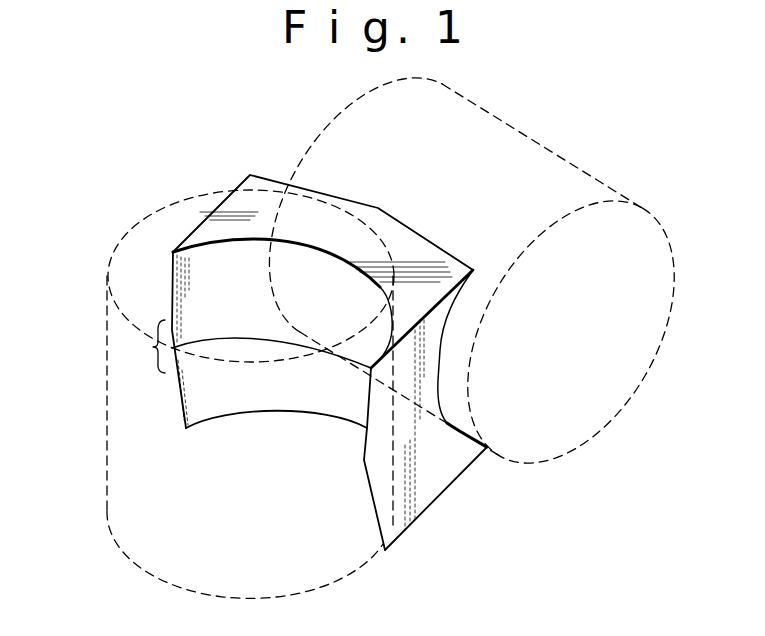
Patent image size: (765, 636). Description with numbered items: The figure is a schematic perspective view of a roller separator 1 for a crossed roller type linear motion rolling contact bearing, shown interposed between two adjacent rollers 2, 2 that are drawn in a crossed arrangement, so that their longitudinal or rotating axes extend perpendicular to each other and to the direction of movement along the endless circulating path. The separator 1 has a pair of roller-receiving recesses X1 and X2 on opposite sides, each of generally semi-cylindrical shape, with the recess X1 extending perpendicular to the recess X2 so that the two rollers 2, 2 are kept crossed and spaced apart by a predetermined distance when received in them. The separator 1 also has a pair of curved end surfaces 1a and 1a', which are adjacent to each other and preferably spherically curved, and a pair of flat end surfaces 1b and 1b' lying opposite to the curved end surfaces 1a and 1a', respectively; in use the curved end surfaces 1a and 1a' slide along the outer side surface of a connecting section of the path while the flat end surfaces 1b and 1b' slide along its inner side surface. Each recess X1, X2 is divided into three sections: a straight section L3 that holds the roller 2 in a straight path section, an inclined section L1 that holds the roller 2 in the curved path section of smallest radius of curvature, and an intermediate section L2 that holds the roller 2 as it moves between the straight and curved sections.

The roller separator 1 is at (363, 343).
The curved end surface 1a is at (436, 412).
The curved end surface 1a' is at (323, 249).
The flat end surface 1b is at (250, 340).
The flat end surface 1b' is at (285, 459).
The roller 2 is at (107, 405).
The inclined section L1 is at (247, 395).
The intermediate section L2 is at (147, 346).
The straight section L3 is at (195, 279).
The roller-receiving recess X1 is at (230, 260).
The roller-receiving recess X2 is at (450, 372).